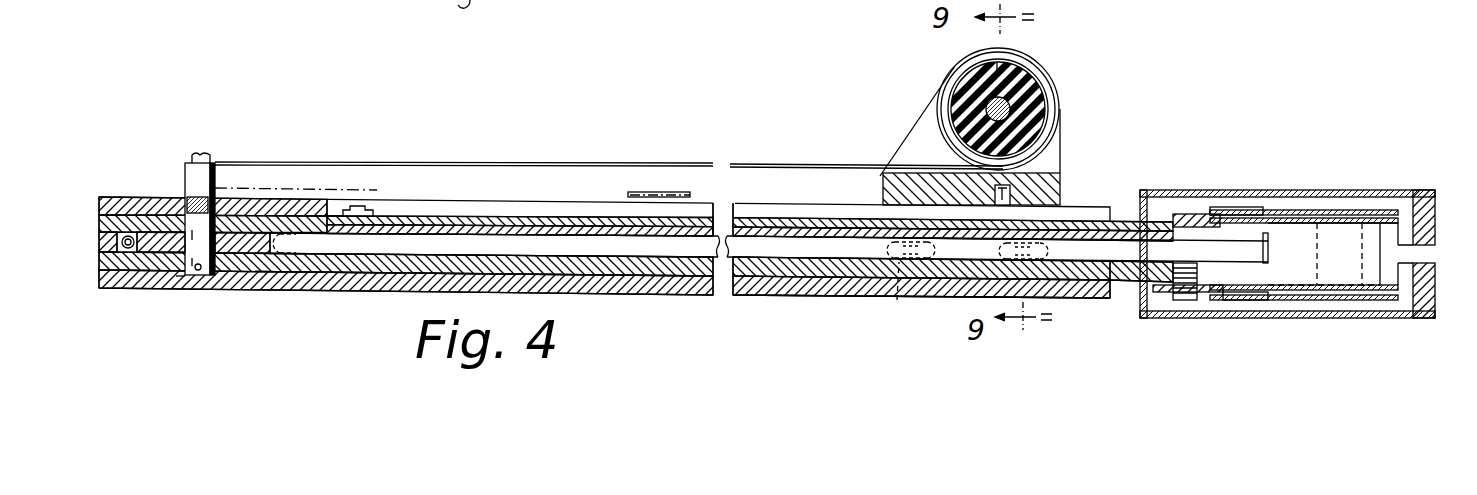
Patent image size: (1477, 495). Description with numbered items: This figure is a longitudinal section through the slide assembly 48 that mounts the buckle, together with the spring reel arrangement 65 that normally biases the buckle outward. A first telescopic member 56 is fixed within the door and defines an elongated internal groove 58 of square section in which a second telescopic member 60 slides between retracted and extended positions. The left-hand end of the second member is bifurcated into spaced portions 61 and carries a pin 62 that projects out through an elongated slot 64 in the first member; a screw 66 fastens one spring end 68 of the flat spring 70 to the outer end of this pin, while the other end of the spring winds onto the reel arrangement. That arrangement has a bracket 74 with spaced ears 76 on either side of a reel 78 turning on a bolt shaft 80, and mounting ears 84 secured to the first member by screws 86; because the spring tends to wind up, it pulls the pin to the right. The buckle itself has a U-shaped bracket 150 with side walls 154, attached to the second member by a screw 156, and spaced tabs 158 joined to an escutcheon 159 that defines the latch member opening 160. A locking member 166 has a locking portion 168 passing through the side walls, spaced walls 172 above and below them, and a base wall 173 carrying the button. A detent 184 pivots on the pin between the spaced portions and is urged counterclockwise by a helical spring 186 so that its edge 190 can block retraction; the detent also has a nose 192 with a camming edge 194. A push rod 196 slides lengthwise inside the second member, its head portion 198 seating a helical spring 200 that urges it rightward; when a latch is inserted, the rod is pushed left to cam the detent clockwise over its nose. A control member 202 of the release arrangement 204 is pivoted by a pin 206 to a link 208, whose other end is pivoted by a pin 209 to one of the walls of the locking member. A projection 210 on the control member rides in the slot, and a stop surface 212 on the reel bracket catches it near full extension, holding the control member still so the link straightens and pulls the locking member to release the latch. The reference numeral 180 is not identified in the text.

The slide assembly 48 is at (772, 302).
The first telescopic member 56 is at (825, 297).
The internal groove 58 is at (600, 273).
The second telescopic member 60 is at (724, 296).
The spaced portions 61 is at (108, 215).
The pin 62 is at (186, 178).
The elongated slot 64 is at (483, 212).
The spring reel arrangement 65 is at (946, 65).
The screw 66 is at (214, 160).
The spring end 68 is at (196, 156).
The flat spring 70 is at (672, 162).
The bracket 74 is at (900, 147).
The spaced ears 76 is at (938, 101).
The reel 78 is at (1035, 72).
The bolt shaft 80 is at (1010, 108).
The mounting ears 84 is at (896, 302).
The screws 86 is at (906, 265).
The U-shaped bracket 150 is at (1160, 200).
The side walls 154 is at (1195, 214).
The screw 156 is at (1158, 318).
The spaced tabs 158 is at (1385, 285).
The escutcheon 159 is at (1435, 189).
The latch member opening 160 is at (1400, 245).
The locking member 166 is at (1383, 215).
The locking portion 168 is at (1325, 215).
The spaced walls 172 is at (1230, 210).
The base wall 173 is at (1380, 318).
The bottom wall 180 is at (1348, 318).
The detent 184 is at (176, 286).
The helical spring 186 is at (135, 289).
The edge 190 is at (99, 241).
The nose 192 is at (320, 287).
The camming edge 194 is at (290, 296).
The push rod 196 is at (530, 242).
The head portion 198 is at (1262, 300).
The helical spring 200 is at (1215, 318).
The control member 202 is at (815, 206).
The release arrangement 204 is at (1118, 213).
The pin 206 is at (1265, 209).
The link 208 is at (1270, 241).
The pin 209 is at (1358, 200).
The projection 210 is at (377, 190).
The stop surface 212 is at (1000, 201).